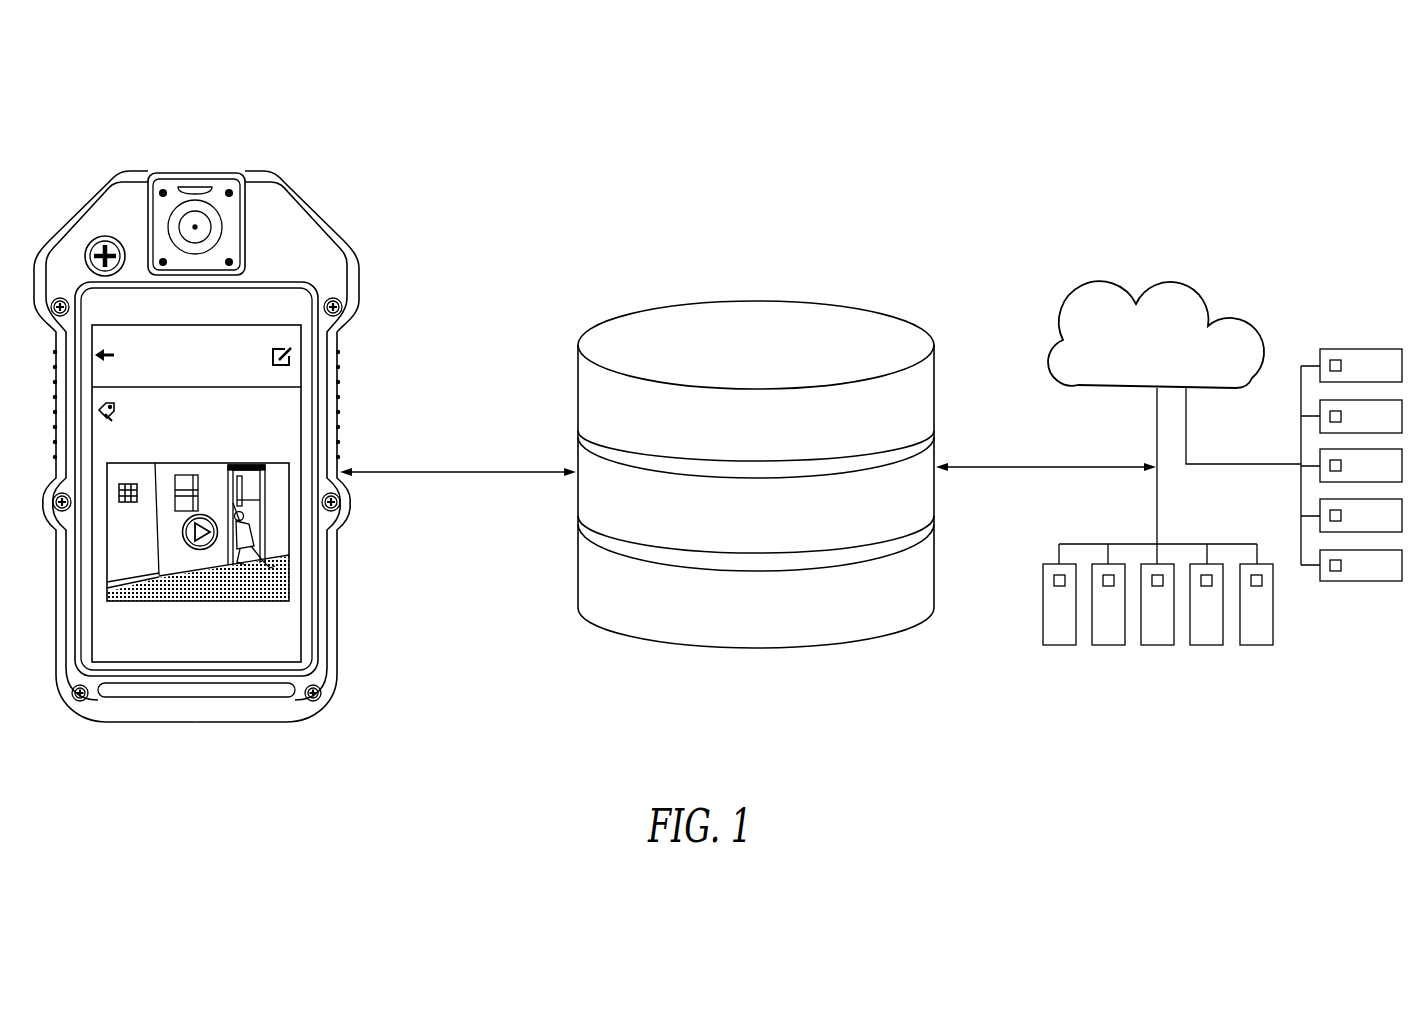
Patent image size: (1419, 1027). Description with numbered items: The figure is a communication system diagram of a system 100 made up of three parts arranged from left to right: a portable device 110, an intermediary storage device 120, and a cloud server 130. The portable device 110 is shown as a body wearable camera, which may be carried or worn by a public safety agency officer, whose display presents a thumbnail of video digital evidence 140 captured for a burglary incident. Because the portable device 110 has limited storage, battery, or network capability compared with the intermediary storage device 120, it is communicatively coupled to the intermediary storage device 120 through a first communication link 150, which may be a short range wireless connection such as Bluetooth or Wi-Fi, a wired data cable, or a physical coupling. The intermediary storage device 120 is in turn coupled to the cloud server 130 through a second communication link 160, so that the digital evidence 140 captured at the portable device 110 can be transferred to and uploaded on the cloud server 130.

The system 100 is at (1340, 146).
The portable device 110 is at (315, 208).
The intermediary storage device 120 is at (760, 301).
The cloud server 130 is at (1183, 287).
The digital evidence 140 is at (257, 540).
The first communication link 150 is at (432, 471).
The second communication link 160 is at (1013, 467).